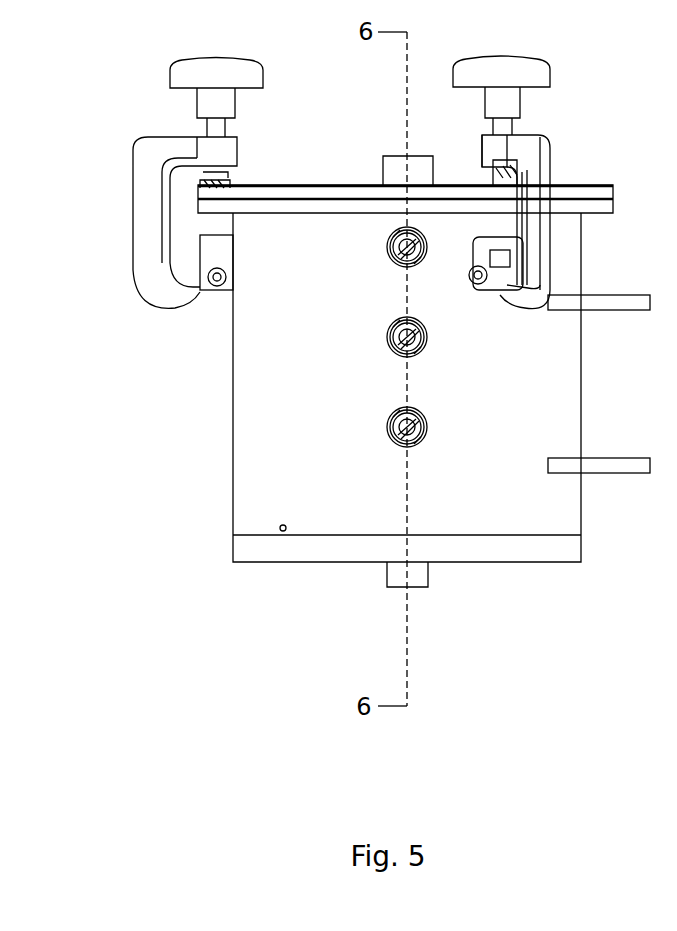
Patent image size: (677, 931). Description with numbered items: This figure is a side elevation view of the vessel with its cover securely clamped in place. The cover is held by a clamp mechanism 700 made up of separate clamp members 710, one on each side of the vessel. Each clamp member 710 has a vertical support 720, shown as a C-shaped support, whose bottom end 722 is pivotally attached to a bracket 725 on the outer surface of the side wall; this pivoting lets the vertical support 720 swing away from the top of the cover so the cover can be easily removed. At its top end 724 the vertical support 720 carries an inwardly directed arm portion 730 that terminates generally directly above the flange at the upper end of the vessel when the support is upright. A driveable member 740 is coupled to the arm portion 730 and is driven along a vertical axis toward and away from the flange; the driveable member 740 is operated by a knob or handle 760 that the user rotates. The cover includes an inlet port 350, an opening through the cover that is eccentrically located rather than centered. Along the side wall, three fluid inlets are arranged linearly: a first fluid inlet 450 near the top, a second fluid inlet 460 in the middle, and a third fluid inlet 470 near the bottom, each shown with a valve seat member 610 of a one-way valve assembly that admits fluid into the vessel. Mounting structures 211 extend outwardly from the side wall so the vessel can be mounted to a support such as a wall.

The clamp mechanism 700 is at (134, 98).
The driveable member 740 is at (213, 108).
The knob or handle 760 is at (497, 66).
The clamp member 710 is at (352, 214).
The top end of the vertical support 724 is at (170, 148).
The arm portion 730 is at (219, 153).
The vertical support 720 is at (142, 208).
The bracket 725 is at (208, 252).
The bottom end of the vertical support 722 is at (199, 297).
The inlet port 350 is at (384, 170).
The valve seat member 610 is at (393, 251).
The first fluid inlet 450 is at (412, 266).
The second fluid inlet 460 is at (420, 348).
The third fluid inlet 470 is at (428, 430).
The mounting structures 211 is at (625, 312).